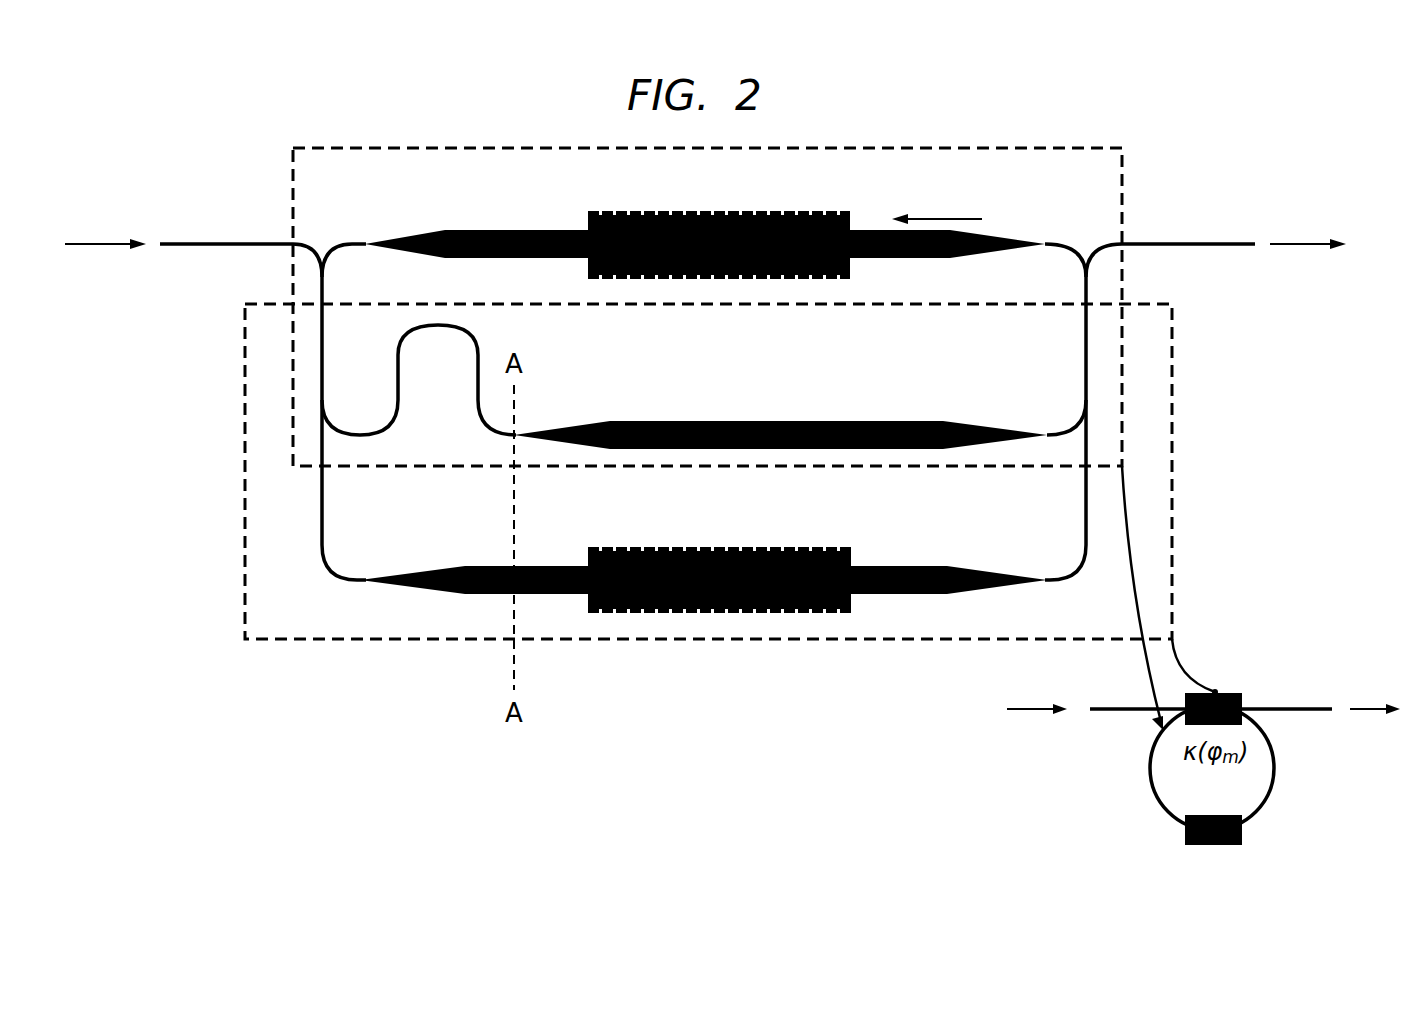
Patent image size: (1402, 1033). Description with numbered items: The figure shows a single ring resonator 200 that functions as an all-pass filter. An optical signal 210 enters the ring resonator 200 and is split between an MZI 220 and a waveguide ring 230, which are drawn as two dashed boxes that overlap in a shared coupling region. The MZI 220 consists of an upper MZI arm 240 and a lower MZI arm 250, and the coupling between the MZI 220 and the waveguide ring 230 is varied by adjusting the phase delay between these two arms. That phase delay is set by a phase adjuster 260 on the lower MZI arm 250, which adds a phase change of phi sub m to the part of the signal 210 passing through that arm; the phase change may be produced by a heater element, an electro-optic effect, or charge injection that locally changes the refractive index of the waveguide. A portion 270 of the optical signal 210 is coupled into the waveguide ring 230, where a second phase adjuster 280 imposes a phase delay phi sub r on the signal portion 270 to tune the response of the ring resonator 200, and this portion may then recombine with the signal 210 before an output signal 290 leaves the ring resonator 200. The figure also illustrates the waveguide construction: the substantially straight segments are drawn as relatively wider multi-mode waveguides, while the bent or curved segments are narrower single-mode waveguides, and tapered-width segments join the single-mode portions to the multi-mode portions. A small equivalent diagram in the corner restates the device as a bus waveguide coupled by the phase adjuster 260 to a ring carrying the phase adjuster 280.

The ring resonator 200 is at (170, 116).
The optical signal 210 is at (104, 242).
The MZI 220 is at (245, 593).
The waveguide ring 230 is at (293, 168).
The upper MZI arm 240 is at (386, 424).
The lower MZI arm 250 is at (332, 566).
The phase adjuster 260 is at (826, 547).
The portion of the optical signal 270 is at (931, 218).
The phase adjuster 280 is at (620, 212).
The output signal 290 is at (1308, 242).